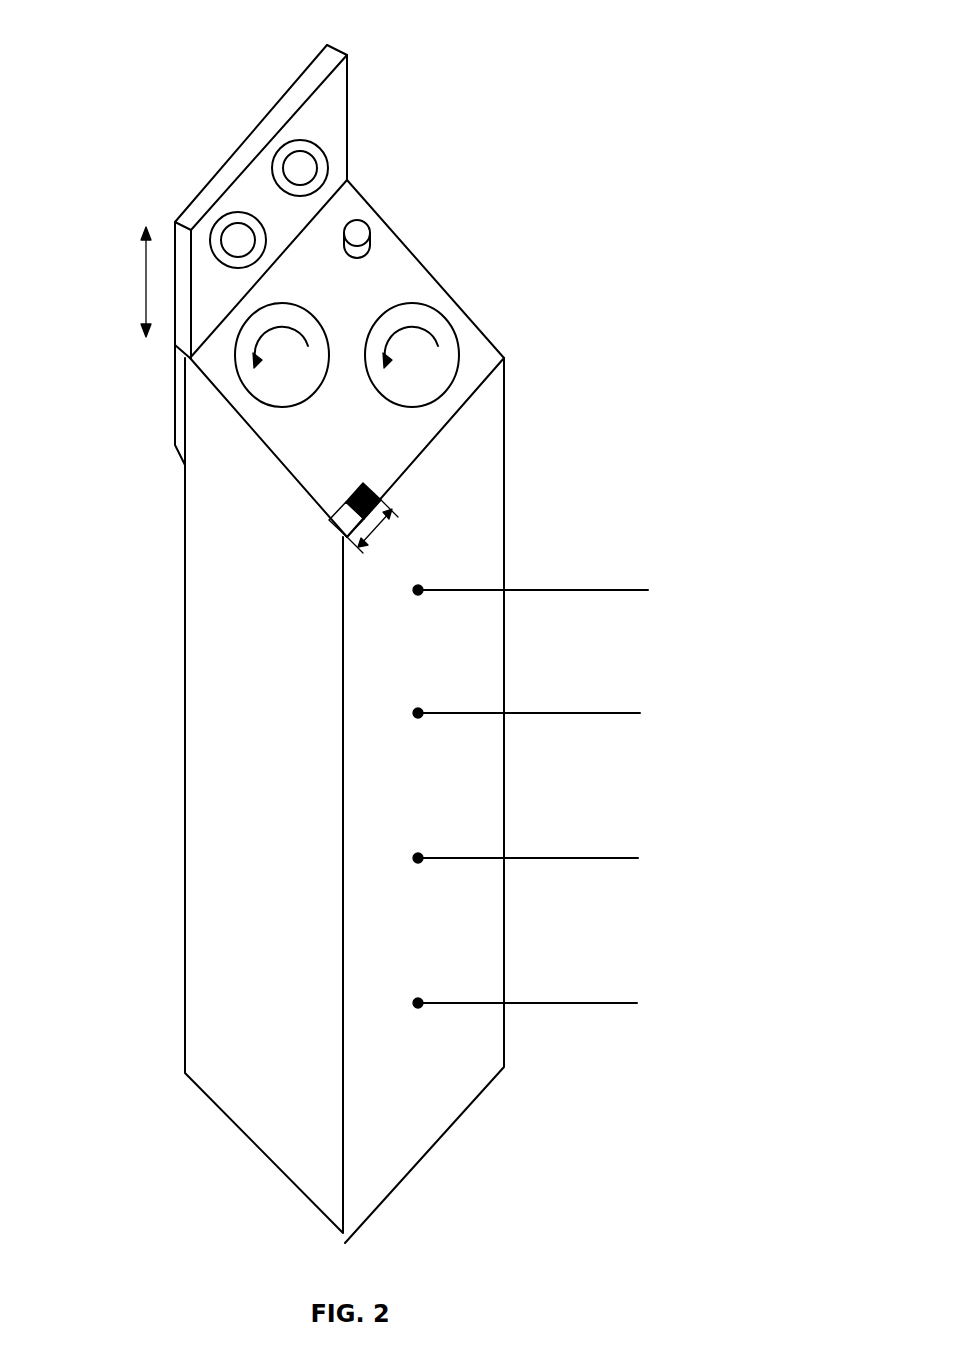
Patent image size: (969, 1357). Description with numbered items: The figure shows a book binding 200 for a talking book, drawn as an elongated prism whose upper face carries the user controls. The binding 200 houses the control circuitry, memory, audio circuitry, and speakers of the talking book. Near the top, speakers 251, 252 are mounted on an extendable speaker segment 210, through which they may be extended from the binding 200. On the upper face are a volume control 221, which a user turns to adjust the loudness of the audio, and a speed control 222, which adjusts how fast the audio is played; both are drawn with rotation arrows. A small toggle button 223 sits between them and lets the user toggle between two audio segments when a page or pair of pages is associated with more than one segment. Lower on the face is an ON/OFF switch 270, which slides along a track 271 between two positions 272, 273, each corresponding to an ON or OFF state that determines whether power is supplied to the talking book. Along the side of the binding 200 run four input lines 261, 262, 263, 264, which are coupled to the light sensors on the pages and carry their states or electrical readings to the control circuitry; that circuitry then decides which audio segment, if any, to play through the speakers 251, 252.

The book binding 200 is at (74, 69).
The extendable speaker segment 210 is at (337, 50).
The volume control 221 is at (281, 303).
The speed control 222 is at (411, 303).
The toggle button 223 is at (357, 220).
The speaker 251 is at (238, 240).
The speaker 252 is at (300, 168).
The input line 261 is at (573, 590).
The input line 262 is at (568, 713).
The input line 263 is at (563, 858).
The input line 264 is at (565, 1003).
The ON/OFF switch 270 is at (368, 483).
The track 271 is at (330, 517).
The position 272 is at (392, 505).
The position 273 is at (355, 548).